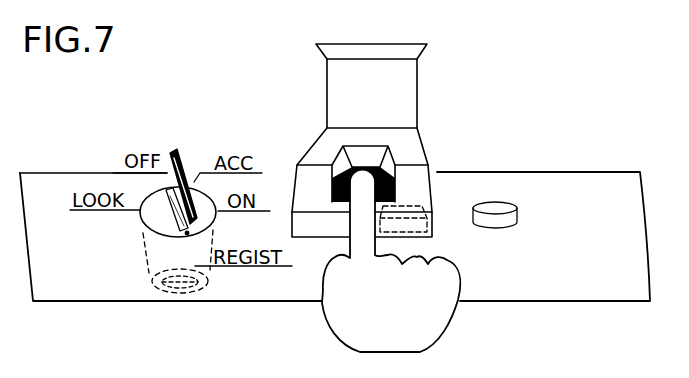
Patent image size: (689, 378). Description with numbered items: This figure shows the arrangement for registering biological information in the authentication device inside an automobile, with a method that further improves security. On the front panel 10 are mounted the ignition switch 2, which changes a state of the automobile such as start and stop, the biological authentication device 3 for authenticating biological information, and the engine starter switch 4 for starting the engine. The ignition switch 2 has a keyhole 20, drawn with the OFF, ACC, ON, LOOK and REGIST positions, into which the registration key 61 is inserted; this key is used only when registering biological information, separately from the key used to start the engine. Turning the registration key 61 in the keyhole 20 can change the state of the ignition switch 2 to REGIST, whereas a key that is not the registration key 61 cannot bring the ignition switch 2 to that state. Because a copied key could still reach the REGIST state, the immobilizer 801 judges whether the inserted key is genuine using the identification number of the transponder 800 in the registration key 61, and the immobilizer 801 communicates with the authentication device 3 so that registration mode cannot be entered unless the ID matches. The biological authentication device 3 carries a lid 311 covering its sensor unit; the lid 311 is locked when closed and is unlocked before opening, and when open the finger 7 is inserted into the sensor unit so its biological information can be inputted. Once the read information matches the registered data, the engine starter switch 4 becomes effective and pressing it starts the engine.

The front panel 10 is at (560, 185).
The ignition switch 2 is at (140, 213).
The keyhole 20 is at (199, 265).
The registration key 61 is at (183, 151).
The transponder 800 is at (132, 173).
The immobilizer 801 is at (175, 295).
The biological authentication device 3 is at (396, 134).
The lid 311 is at (397, 43).
The engine starter switch 4 is at (490, 208).
The finger 7 is at (360, 222).